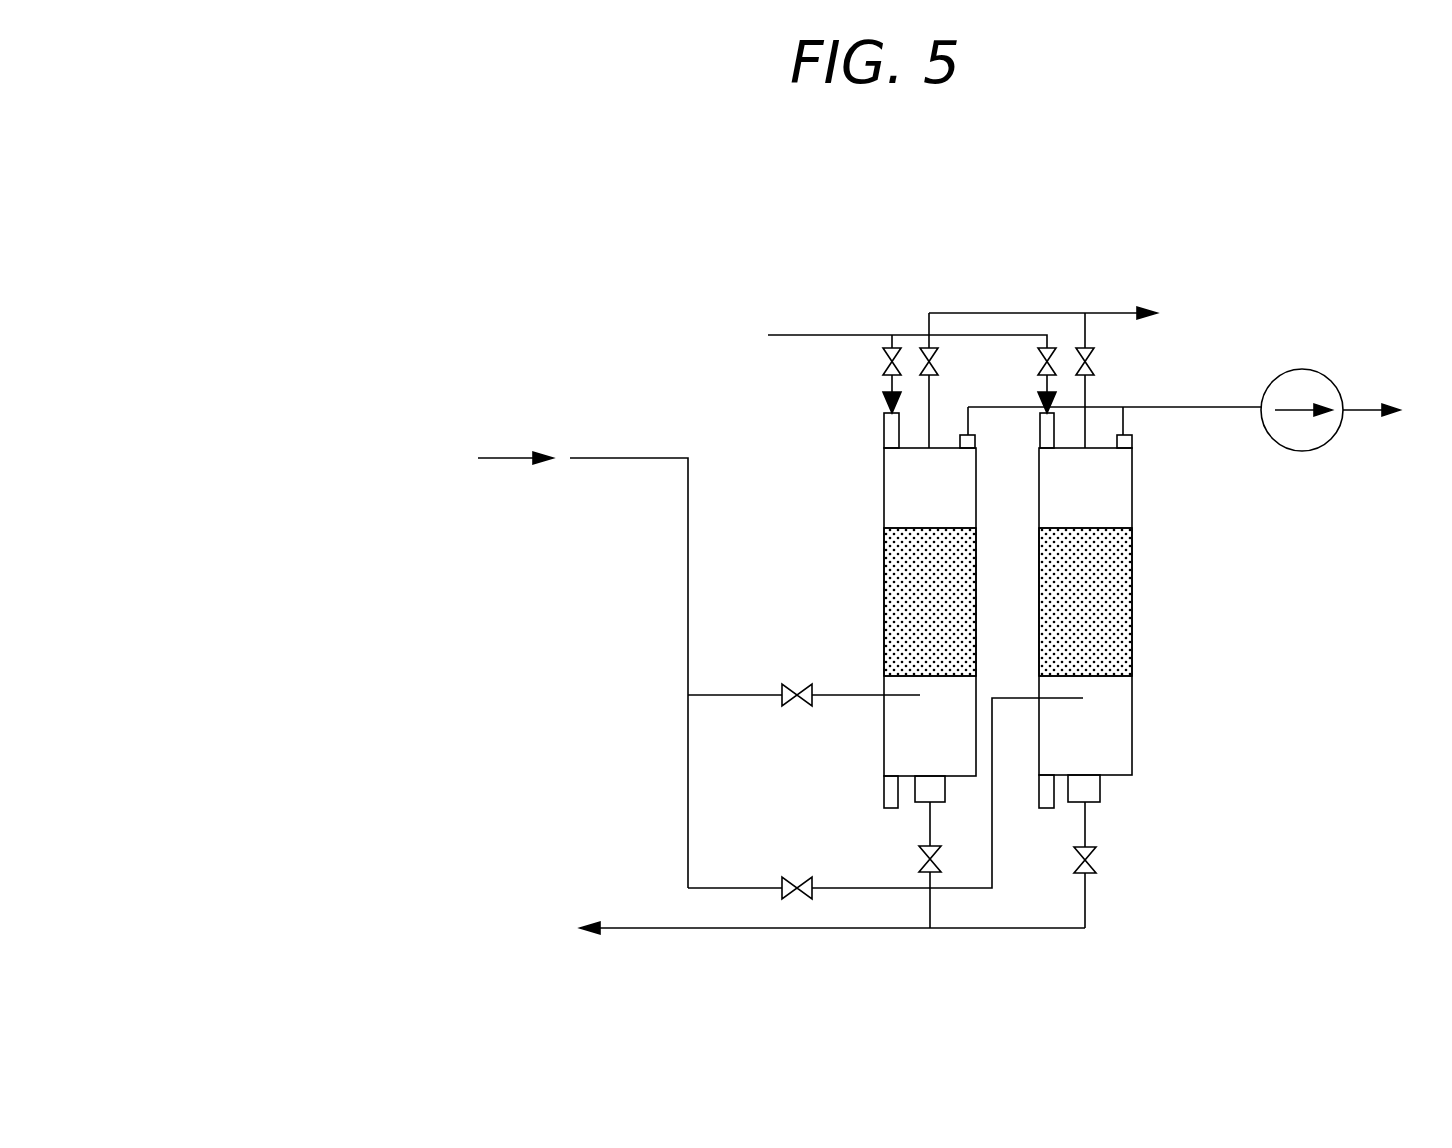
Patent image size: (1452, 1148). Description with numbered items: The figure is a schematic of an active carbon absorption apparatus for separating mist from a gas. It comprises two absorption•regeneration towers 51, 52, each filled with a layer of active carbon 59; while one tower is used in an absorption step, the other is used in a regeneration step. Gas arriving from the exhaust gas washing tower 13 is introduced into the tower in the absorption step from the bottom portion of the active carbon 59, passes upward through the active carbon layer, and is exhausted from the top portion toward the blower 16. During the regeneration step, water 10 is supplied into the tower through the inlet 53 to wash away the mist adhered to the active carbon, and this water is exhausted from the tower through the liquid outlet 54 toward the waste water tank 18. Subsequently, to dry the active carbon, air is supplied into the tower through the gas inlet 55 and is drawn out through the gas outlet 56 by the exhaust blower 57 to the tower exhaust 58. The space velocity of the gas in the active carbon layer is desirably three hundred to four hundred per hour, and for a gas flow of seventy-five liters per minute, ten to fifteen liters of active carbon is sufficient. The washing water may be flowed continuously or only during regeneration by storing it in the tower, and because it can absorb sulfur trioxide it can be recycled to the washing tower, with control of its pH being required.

The water 10 is at (829, 364).
The exhaust gas washing tower 13 is at (610, 660).
The blower 16 is at (1161, 371).
The waste water tank 18 is at (606, 927).
The absorption•regeneration tower 51 is at (884, 740).
The absorption•regeneration tower 52 is at (1132, 727).
The inlet 53 is at (1040, 436).
The liquid outlet 54 is at (915, 802).
The gas inlet 55 is at (884, 790).
The gas outlet 56 is at (975, 442).
The exhaust blower 57 is at (1337, 386).
The tower exhaust 58 is at (1393, 412).
The active carbon 59 is at (947, 607).